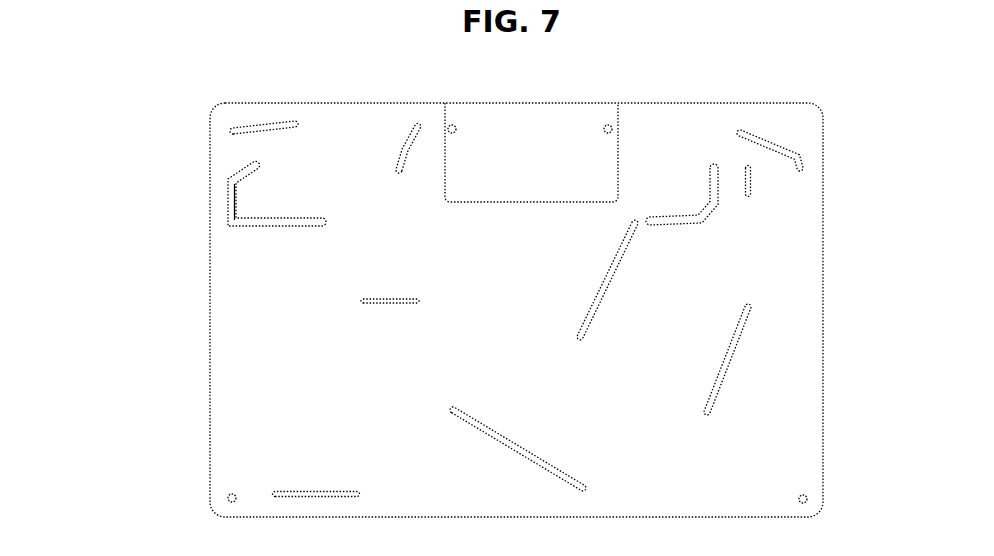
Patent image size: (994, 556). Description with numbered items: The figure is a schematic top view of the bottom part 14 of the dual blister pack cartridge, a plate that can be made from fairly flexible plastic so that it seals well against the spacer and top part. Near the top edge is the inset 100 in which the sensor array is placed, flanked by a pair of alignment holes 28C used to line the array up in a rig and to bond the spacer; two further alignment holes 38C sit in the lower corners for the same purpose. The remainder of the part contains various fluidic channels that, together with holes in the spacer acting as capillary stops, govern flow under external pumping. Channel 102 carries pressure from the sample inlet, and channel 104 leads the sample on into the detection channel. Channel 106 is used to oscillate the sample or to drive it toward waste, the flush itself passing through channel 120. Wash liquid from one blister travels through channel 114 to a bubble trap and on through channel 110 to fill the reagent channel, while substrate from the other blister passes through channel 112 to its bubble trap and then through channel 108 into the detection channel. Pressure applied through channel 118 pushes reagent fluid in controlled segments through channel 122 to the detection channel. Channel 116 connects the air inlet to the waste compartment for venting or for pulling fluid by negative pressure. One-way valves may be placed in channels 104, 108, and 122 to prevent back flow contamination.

The bottom part 14 is at (789, 437).
The alignment holes 28C is at (453, 121).
The alignment holes 38C is at (232, 496).
The inset 100 is at (519, 121).
The channel 102 is at (257, 120).
The channel 104 is at (413, 120).
The channel 106 is at (746, 130).
The channel 108 is at (754, 181).
The channel 110 is at (622, 263).
The channel 112 is at (740, 356).
The channel 114 is at (461, 427).
The channel 116 is at (267, 497).
The channel 118 is at (359, 300).
The channel 120 is at (231, 203).
The channel 122 is at (714, 217).